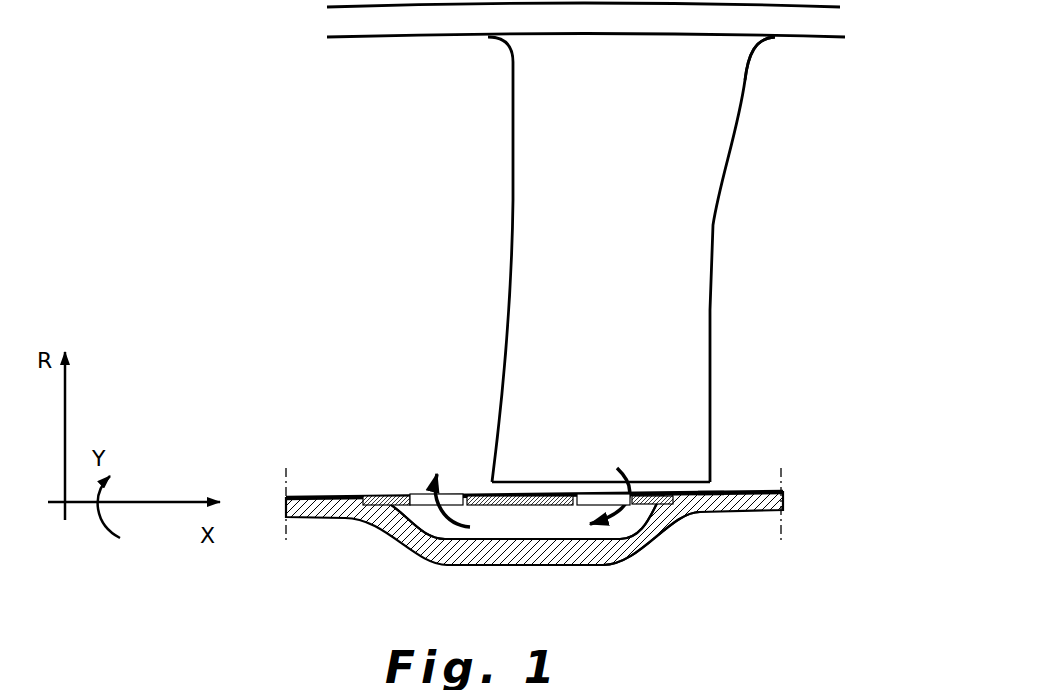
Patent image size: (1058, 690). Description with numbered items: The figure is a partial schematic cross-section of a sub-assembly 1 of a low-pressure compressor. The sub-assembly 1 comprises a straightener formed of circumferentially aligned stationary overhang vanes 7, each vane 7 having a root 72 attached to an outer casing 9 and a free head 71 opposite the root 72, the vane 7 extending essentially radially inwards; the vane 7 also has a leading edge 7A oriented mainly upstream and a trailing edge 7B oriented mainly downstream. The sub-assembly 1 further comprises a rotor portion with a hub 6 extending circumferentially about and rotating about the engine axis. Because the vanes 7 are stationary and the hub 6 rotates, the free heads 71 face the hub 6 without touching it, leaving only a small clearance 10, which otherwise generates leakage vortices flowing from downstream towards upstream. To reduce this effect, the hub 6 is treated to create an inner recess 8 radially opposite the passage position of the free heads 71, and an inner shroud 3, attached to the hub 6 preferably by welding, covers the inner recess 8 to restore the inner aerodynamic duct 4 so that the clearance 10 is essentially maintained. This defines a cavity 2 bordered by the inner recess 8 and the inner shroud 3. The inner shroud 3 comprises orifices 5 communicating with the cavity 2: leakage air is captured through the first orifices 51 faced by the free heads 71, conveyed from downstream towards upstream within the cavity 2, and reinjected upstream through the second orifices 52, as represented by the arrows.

The sub-assembly 1 is at (362, 192).
The cavity 2 is at (534, 538).
The inner shroud 3 is at (380, 496).
The inner aerodynamic duct 4 is at (748, 492).
The orifices 5 is at (449, 486).
The first orifices 51 is at (597, 490).
The second orifices 52 is at (457, 490).
The hub 6 is at (660, 556).
The overhang vane 7 is at (617, 259).
The leading edge 7A is at (500, 199).
The trailing edge 7B is at (730, 222).
The free head 71 is at (521, 469).
The root 72 is at (708, 47).
The inner recess 8 is at (502, 526).
The outer casing 9 is at (793, 22).
The clearance 10 is at (720, 490).